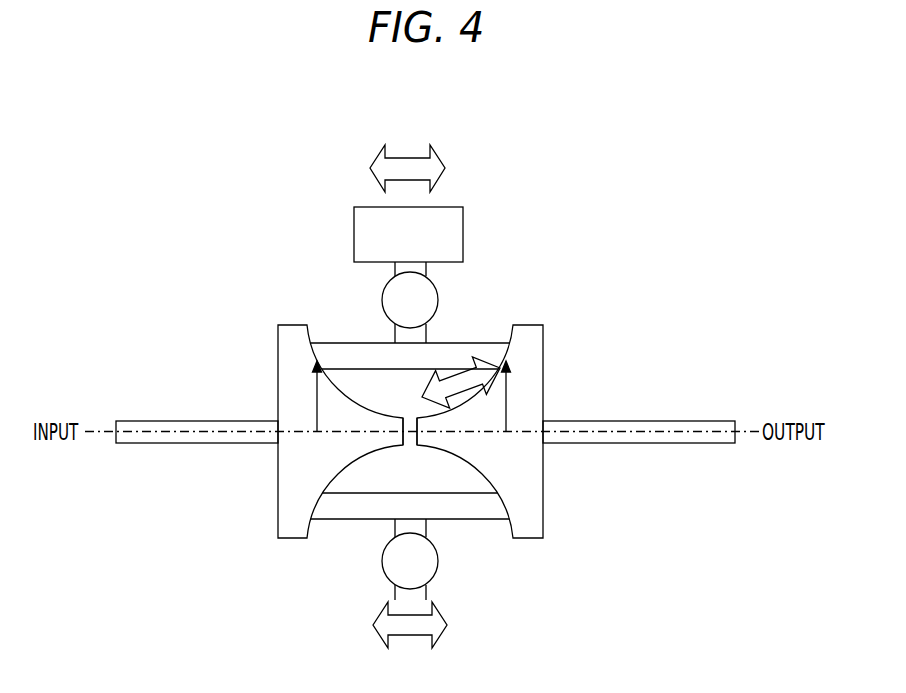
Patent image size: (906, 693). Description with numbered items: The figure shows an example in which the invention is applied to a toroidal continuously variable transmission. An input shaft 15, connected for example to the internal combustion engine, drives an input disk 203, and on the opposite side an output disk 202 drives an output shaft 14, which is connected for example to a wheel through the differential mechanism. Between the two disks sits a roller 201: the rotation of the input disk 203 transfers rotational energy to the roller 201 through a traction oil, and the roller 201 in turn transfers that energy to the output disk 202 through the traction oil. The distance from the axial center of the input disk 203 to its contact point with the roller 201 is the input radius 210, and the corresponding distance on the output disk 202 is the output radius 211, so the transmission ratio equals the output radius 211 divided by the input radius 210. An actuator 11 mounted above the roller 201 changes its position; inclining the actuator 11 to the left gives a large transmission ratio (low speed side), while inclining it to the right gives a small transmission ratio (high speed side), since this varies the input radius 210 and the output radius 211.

The actuator 11 is at (455, 207).
The output shaft 14 is at (622, 421).
The input shaft 15 is at (182, 421).
The roller 201 is at (440, 343).
The output disk 202 is at (530, 325).
The input disk 203 is at (295, 325).
The input radius 210 is at (317, 403).
The output radius 211 is at (506, 403).